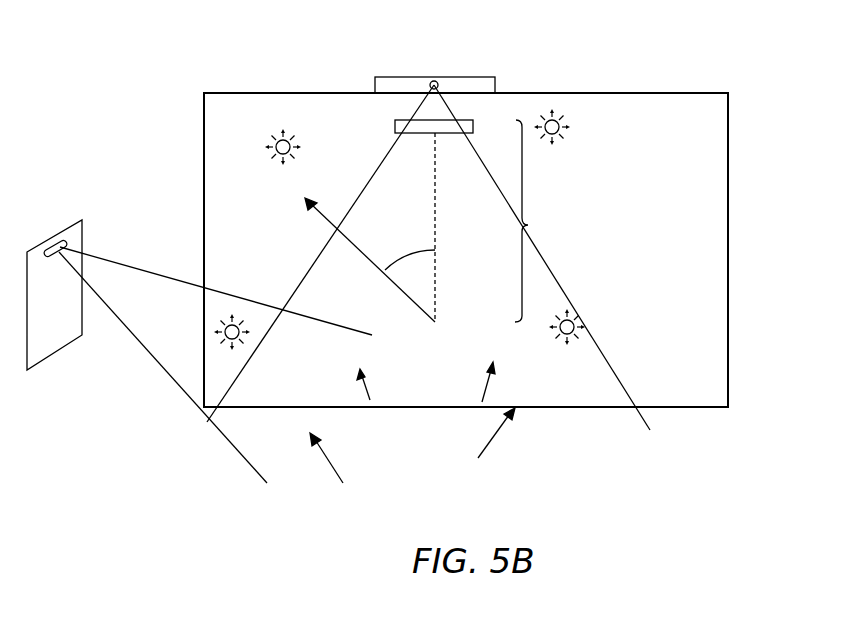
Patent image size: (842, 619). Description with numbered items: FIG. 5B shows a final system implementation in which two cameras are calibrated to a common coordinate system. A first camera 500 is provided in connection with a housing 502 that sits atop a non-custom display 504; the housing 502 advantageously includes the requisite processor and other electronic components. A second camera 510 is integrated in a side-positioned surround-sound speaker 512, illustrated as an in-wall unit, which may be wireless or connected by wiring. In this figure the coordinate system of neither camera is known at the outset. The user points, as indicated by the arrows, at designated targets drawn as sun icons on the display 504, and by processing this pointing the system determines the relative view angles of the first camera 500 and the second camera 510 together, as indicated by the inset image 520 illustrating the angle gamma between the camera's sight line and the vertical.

The first camera 500 is at (432, 82).
The housing 502 is at (466, 77).
The non-custom display 504 is at (706, 244).
The second camera 510 is at (60, 244).
The surround-sound speaker 512 is at (67, 383).
The inset image 520 is at (542, 221).